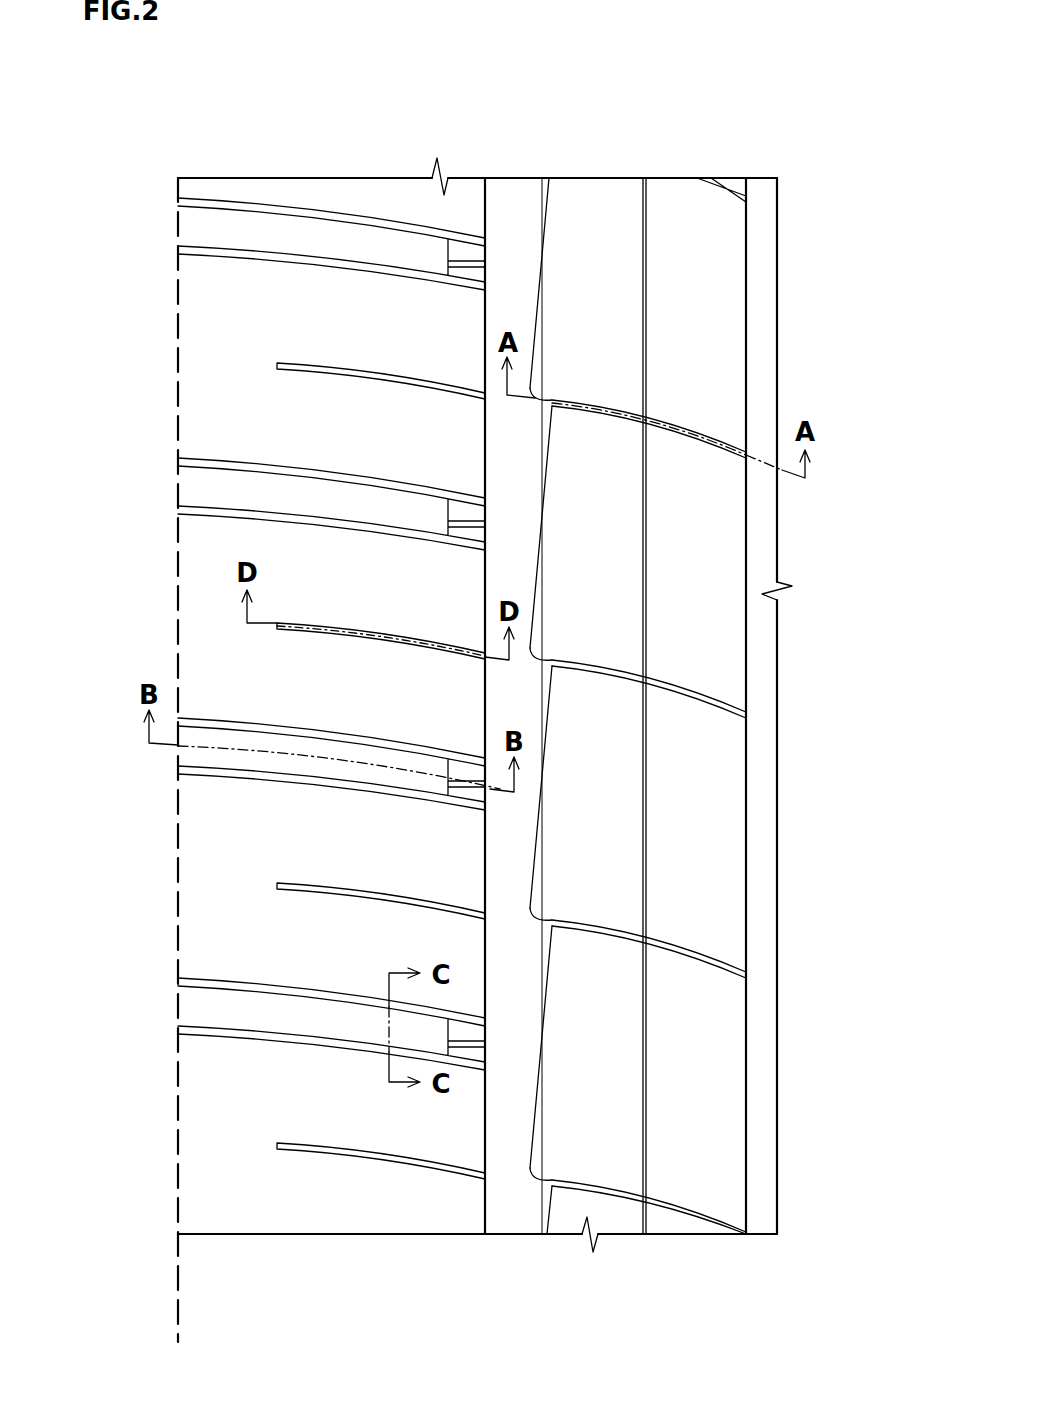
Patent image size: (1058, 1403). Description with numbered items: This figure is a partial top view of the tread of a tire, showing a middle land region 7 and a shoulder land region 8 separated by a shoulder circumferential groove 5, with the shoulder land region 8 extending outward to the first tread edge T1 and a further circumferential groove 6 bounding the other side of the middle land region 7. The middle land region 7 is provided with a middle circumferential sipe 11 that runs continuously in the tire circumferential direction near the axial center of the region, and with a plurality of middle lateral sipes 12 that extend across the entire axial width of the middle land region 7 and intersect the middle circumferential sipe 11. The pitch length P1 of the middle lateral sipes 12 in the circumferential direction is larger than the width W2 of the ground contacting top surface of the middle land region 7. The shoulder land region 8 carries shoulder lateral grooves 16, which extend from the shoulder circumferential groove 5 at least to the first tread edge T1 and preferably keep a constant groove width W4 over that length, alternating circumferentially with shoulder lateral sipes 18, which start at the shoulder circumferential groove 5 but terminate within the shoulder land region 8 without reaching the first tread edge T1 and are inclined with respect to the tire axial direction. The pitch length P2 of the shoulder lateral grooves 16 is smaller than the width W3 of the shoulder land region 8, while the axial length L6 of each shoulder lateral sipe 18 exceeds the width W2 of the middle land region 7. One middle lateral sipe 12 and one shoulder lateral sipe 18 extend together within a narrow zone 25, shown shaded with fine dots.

The shoulder circumferential groove 5 is at (517, 194).
The shoulder land portion 6 is at (768, 194).
The middle land region 7 is at (609, 194).
The shoulder land region 8 is at (369, 194).
The middle circumferential sipe 11 is at (645, 278).
The middle lateral sipes 12 is at (680, 430).
The shoulder lateral grooves 16 is at (306, 243).
The shoulder lateral sipes 18 is at (345, 372).
The zone 25 is at (605, 920).
The first tread edge T1 is at (178, 183).
The pitch length of the middle lateral sipes P1 is at (750, 712).
The pitch length of the shoulder lateral grooves P2 is at (85, 225).
The width of the middle land region W2 is at (542, 1234).
The width of the shoulder land region W3 is at (485, 1234).
The groove width of the shoulder lateral grooves W4 is at (232, 721).
The length of the shoulder lateral sipe L6 is at (277, 1157).